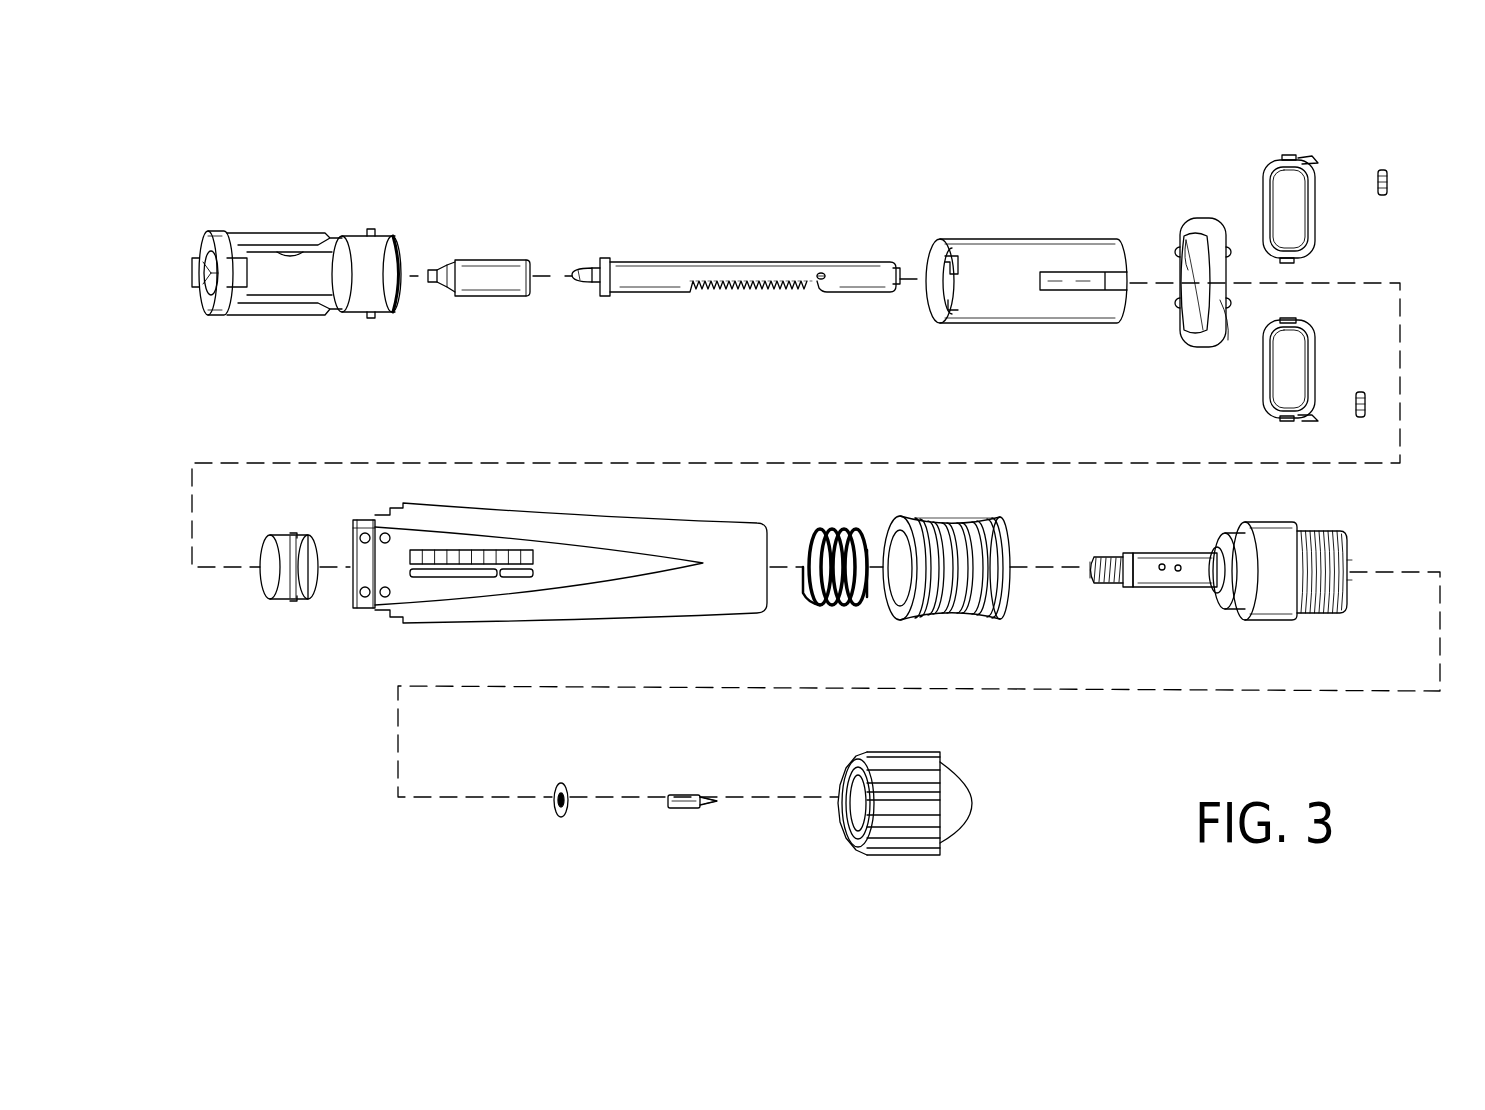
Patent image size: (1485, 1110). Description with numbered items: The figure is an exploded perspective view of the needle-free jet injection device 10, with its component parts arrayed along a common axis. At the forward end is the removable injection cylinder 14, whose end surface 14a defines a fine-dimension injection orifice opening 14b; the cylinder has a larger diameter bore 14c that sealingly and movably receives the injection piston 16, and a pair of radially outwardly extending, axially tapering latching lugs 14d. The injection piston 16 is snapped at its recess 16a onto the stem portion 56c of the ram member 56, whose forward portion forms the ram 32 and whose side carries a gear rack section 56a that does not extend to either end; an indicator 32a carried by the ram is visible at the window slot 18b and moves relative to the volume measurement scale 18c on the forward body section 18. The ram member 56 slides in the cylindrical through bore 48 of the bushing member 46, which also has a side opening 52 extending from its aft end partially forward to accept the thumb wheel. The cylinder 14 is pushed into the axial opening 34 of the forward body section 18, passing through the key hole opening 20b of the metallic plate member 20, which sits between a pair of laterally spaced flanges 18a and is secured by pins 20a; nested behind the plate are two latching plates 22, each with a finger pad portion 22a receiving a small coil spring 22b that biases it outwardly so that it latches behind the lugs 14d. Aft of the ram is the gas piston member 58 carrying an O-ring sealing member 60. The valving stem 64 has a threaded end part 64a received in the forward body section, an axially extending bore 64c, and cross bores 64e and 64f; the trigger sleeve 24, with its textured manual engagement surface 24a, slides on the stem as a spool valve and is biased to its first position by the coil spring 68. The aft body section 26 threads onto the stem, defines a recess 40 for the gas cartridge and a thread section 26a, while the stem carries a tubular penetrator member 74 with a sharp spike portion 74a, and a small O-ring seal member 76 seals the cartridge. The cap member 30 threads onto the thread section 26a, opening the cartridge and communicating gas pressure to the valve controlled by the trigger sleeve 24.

The needle-free jet injection device 10 is at (468, 177).
The injection cylinder member 14 is at (283, 328).
The end surface 14a is at (212, 240).
The injection orifice opening 14b is at (200, 272).
The larger diameter bore 14c is at (295, 252).
The latching lugs 14d is at (374, 318).
The injection piston 16 is at (478, 268).
The recess 16a is at (528, 300).
The ram 32 is at (580, 242).
The ram/rack member 56 is at (652, 270).
The gear rack section 56a is at (748, 290).
The stem portion 56c is at (585, 290).
The indicator 32a is at (824, 281).
The cylindrical through bore 48 is at (916, 260).
The sleeve 46 is at (975, 305).
The side opening 52 is at (1065, 290).
The metallic plate member 20 is at (1190, 258).
The pins 20a is at (1174, 303).
The key hole opening 20b is at (1192, 242).
The latching plates 22 is at (1300, 256).
The finger pad portion 22a is at (1310, 162).
The small coil spring 22b is at (1390, 183).
The gas piston member 58 is at (266, 540).
The O-ring sealing member 60 is at (294, 533).
The axial opening 34 is at (344, 600).
The forward body section 18 is at (598, 510).
The flanges 18a is at (373, 610).
The window slot 18b is at (483, 579).
The volume measurement scale 18c is at (465, 550).
The coil spring 68 is at (812, 604).
The trigger sleeve 24 is at (942, 615).
The manual engagement surface 24a is at (938, 522).
The valving stem 64 is at (1130, 588).
The threaded end part 64a is at (1110, 558).
The axially extending bore 64c is at (1090, 578).
The cross bore 64e is at (1163, 564).
The cross bore 64f is at (1179, 572).
The aft body section 26 is at (1260, 622).
The thread section 26a is at (1320, 614).
The recess 40 is at (1355, 553).
The cap member 30 is at (948, 768).
The tubular penetrator member 74 is at (682, 794).
The sharp spike portion 74a is at (712, 806).
The small O-ring seal member 76 is at (560, 817).